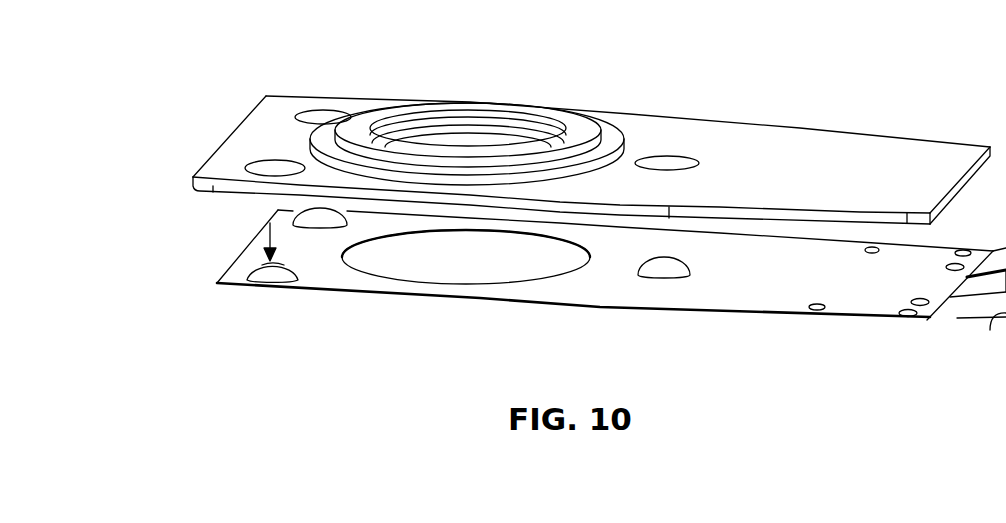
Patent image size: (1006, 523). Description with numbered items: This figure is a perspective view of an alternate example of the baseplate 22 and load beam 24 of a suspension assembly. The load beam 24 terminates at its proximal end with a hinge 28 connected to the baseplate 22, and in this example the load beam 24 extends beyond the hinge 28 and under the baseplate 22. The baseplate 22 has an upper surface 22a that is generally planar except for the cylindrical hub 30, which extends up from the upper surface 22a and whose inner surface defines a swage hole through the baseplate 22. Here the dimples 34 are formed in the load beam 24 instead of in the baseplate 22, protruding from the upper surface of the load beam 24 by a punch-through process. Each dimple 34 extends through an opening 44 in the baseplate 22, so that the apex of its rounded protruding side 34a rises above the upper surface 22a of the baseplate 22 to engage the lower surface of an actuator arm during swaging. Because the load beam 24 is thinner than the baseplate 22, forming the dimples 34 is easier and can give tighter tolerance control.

The baseplate 22 is at (865, 135).
The upper surface 22a is at (861, 187).
The load beam 24 is at (743, 310).
The hinge 28 is at (963, 320).
The cylindrical hub 30 is at (574, 124).
The dimple 34 is at (243, 260).
The protruding side 34a is at (253, 263).
The opening 44 is at (245, 168).